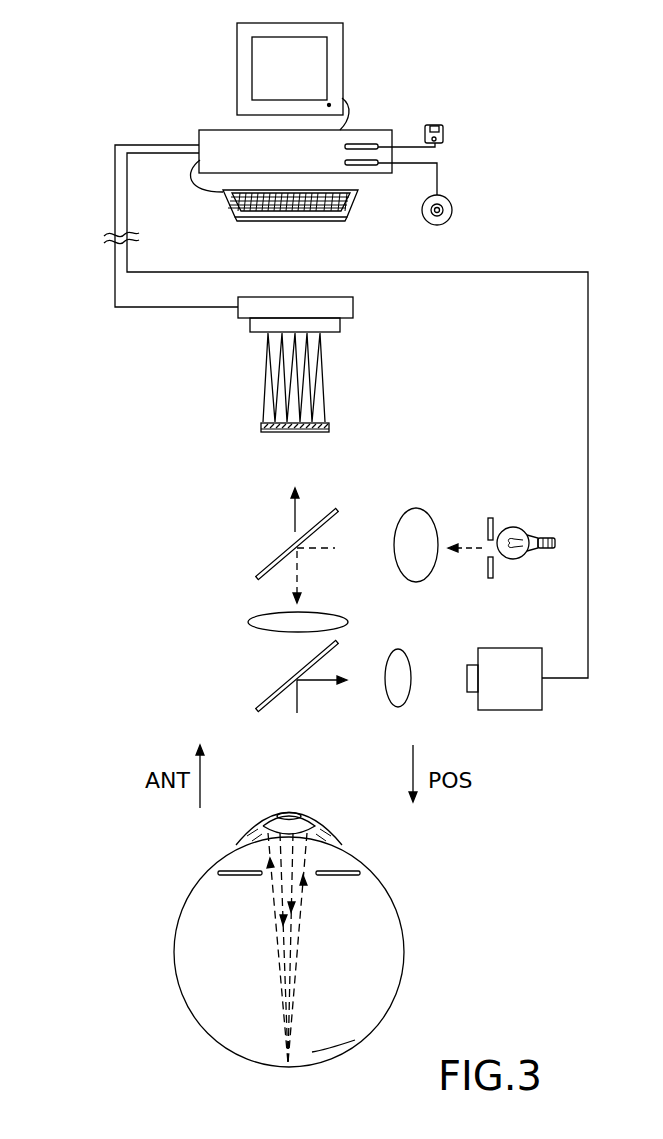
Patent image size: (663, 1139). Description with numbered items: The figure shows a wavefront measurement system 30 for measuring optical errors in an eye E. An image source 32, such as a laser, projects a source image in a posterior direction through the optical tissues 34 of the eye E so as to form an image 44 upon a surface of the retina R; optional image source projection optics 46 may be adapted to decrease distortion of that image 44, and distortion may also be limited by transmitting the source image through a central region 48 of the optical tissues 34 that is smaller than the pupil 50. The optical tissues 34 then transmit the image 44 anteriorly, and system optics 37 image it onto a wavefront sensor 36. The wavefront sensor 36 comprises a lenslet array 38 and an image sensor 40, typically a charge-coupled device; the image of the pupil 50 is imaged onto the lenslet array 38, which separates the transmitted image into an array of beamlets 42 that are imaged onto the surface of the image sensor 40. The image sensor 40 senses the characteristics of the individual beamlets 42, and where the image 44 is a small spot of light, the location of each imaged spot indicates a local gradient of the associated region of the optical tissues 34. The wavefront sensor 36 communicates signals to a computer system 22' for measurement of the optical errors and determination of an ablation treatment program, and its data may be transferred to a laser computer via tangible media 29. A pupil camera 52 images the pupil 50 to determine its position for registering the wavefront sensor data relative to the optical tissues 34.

The wavefront measurement system 30 is at (90, 86).
The computer system 22' is at (342, 122).
The tangible media 29 is at (443, 135).
The wavefront sensor 36 is at (297, 365).
The image sensor 40 is at (257, 331).
The beamlets 42 is at (292, 384).
The lenslet array 38 is at (262, 426).
The system optics 37 is at (248, 618).
The image source projection optics 46 is at (413, 506).
The image source 32 is at (515, 508).
The pupil camera 52 is at (530, 712).
The optical tissues 34 is at (304, 790).
The central region 48 is at (287, 811).
The pupil 50 is at (360, 872).
The eye E is at (178, 911).
The image 44 is at (288, 1063).
The retina R is at (355, 1040).